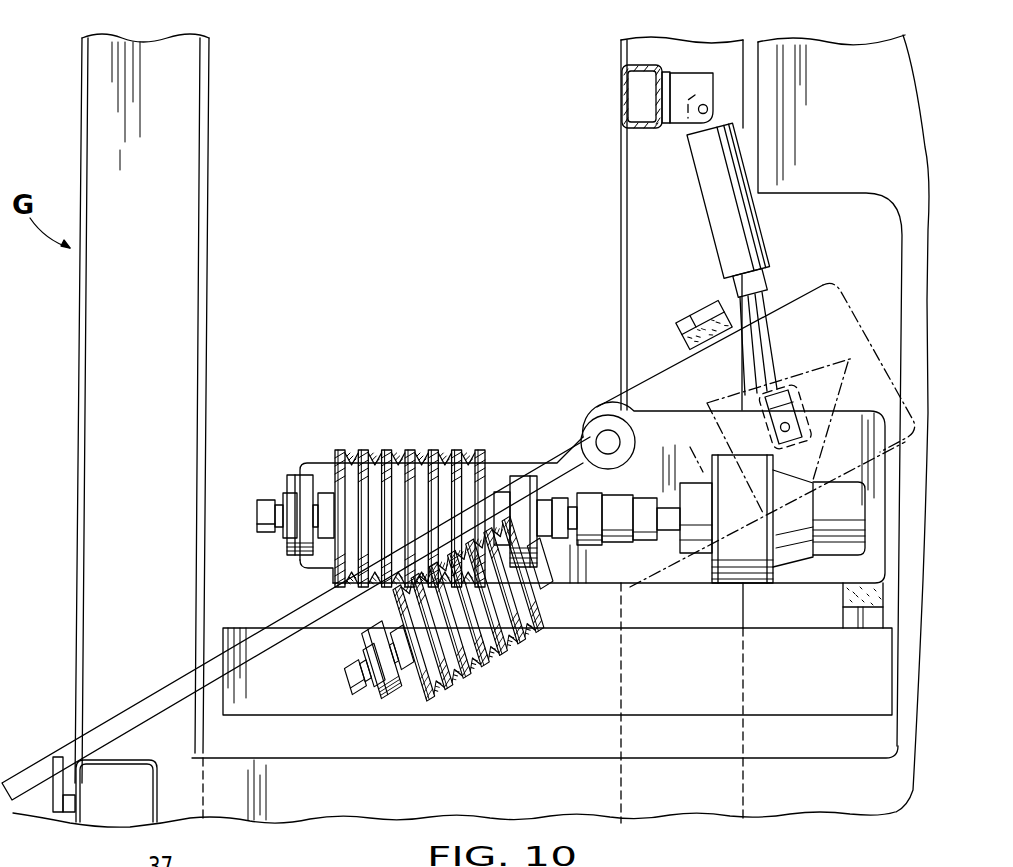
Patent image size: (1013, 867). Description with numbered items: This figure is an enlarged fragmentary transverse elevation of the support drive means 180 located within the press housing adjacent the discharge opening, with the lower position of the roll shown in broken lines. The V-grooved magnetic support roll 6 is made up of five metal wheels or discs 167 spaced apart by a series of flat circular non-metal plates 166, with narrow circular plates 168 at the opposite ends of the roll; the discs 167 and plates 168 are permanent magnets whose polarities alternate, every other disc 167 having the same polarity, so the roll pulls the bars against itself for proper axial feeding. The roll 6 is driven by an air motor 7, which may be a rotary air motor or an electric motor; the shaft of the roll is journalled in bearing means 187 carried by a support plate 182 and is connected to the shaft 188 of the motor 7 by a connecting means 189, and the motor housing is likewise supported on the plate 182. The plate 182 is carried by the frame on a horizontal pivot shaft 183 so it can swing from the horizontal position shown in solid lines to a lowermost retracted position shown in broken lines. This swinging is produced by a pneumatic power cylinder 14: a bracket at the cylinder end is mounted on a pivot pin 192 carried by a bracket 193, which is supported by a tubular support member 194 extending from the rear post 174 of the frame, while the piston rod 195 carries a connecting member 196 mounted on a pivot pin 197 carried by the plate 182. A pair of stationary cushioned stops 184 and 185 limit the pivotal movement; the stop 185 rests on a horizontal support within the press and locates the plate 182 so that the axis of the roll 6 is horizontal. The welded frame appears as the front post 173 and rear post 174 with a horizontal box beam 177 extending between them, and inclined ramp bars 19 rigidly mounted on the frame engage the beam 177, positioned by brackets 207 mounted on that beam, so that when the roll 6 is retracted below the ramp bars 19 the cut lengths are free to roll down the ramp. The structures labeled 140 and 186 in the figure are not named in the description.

The V-grooved magnetic support roll 6 is at (332, 453).
The air motor 7 is at (757, 460).
The pneumatic power cylinder 14 is at (720, 200).
The inclined ramp bars 19 is at (153, 690).
The frame wall 140 is at (775, 193).
The flat circular non-metal plates 166 is at (418, 585).
The metal wheels or discs 167 is at (473, 450).
The narrow circular plates 168 is at (492, 458).
The vertical posts 173 is at (190, 242).
The vertical posts 174 is at (627, 185).
The horizontal box beam 177 is at (123, 760).
The support drive means 180 is at (600, 405).
The support plate 182 is at (812, 292).
The horizontal pivot shaft 183 is at (600, 457).
The stationary cushioned stop 184 is at (690, 340).
The stationary cushioned stop 185 is at (845, 595).
The base block 186 is at (300, 713).
The bearing means 187 is at (295, 542).
The motor shaft 188 is at (690, 485).
The connecting means 189 is at (627, 537).
The pivot pin 192 is at (704, 103).
The bracket 193 is at (688, 82).
The tubular support member 194 is at (640, 68).
The piston rod 195 is at (757, 333).
The connecting member 196 is at (792, 392).
The pivot pin 197 is at (792, 418).
The brackets 207 is at (53, 790).